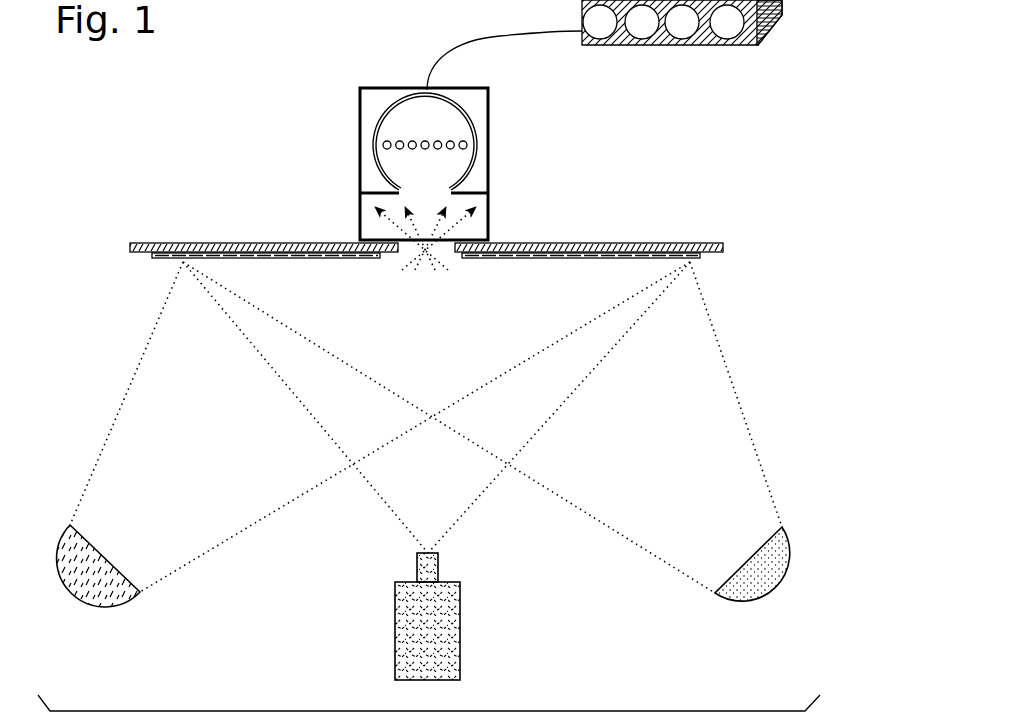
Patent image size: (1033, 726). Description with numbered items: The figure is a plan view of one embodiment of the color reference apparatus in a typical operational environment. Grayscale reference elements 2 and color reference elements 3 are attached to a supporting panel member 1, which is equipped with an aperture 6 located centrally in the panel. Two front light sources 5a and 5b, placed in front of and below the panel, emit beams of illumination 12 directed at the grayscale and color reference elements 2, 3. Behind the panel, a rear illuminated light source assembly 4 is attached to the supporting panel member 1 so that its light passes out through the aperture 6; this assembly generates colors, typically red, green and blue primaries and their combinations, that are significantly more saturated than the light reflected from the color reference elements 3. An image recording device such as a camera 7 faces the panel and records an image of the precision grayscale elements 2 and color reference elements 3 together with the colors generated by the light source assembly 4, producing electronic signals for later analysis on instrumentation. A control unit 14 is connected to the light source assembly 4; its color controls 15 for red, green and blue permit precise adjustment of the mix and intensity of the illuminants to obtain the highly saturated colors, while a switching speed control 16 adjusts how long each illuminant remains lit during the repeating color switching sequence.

The supporting panel member 1 is at (566, 240).
The grayscale reference elements 2 is at (184, 268).
The color reference elements 3 is at (283, 268).
The rear illuminated light source assembly 4 is at (357, 125).
The front light source 5a is at (88, 618).
The front light source 5b is at (776, 618).
The aperture 6 is at (427, 254).
The camera 7 is at (466, 638).
The beams of illumination 12 is at (212, 495).
The control unit 14 is at (780, 34).
The color controls r,g,b 15 is at (680, 52).
The switching speed control 16 is at (726, 52).